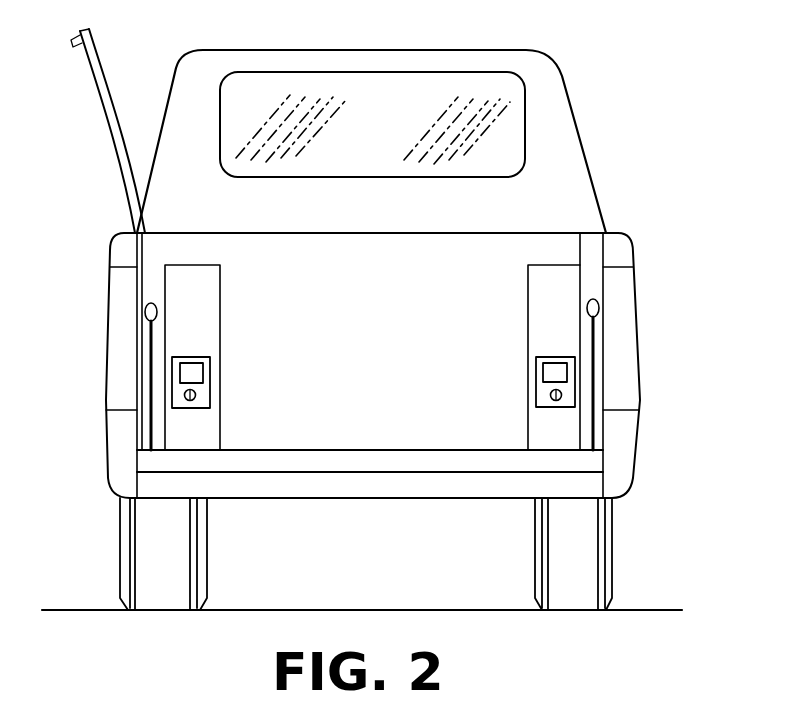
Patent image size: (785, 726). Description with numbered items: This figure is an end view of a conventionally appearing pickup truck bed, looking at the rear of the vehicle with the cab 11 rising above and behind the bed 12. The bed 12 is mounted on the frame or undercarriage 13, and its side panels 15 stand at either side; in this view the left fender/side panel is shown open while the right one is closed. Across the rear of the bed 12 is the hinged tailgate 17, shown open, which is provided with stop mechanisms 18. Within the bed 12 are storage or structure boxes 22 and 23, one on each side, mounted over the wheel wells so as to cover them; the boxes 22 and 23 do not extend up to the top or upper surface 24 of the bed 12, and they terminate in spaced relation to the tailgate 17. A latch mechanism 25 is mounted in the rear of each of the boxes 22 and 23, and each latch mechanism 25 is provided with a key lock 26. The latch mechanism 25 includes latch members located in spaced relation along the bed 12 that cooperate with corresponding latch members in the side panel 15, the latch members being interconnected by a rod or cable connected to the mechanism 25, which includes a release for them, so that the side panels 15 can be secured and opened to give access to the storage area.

The cab 11 is at (576, 208).
The bed 12 is at (392, 287).
The frame or undercarriage 13 is at (108, 468).
The side panels 15 is at (107, 65).
The hinged tailgate 17 is at (362, 448).
The stop mechanisms 18 is at (148, 337).
The storage box 22 is at (226, 357).
The storage box 23 is at (528, 290).
The upper surface of bed 24 is at (198, 231).
The latch mechanism 25 is at (193, 373).
The key lock 26 is at (196, 395).